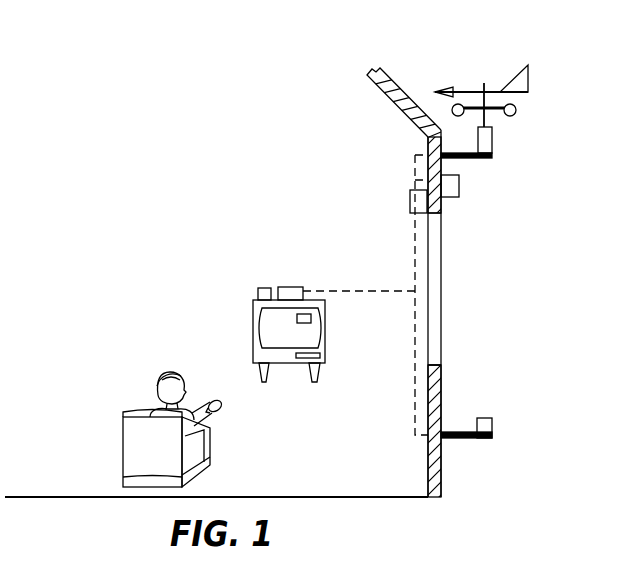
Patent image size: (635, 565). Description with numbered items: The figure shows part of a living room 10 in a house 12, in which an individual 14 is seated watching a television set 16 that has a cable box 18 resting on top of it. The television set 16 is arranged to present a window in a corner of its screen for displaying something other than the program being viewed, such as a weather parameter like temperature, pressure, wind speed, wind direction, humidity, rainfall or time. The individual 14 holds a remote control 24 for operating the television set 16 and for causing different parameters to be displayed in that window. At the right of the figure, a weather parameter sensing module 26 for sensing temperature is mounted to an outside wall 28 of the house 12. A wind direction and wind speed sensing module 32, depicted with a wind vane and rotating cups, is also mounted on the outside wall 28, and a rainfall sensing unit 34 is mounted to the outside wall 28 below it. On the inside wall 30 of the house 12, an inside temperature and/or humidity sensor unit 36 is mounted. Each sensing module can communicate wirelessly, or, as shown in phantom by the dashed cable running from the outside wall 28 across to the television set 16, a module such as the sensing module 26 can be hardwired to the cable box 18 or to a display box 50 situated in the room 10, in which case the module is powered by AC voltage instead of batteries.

The living room 10 is at (186, 327).
The house 12 is at (456, 470).
The individual 14 is at (150, 413).
The television set 16 is at (325, 335).
The cable box 18 is at (291, 287).
The remote control 24 is at (222, 408).
The weather parameter sensing module 26 is at (459, 187).
The outside wall 28 is at (442, 377).
The inside wall 30 is at (428, 402).
The wind direction and wind speed sensing module 32 is at (535, 127).
The rainfall sensing unit 34 is at (492, 425).
The inside temperature and/or humidity sensor unit 36 is at (409, 203).
The display box 50 is at (263, 288).